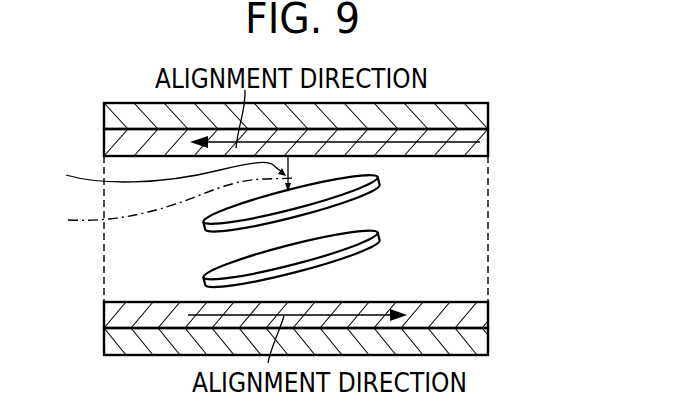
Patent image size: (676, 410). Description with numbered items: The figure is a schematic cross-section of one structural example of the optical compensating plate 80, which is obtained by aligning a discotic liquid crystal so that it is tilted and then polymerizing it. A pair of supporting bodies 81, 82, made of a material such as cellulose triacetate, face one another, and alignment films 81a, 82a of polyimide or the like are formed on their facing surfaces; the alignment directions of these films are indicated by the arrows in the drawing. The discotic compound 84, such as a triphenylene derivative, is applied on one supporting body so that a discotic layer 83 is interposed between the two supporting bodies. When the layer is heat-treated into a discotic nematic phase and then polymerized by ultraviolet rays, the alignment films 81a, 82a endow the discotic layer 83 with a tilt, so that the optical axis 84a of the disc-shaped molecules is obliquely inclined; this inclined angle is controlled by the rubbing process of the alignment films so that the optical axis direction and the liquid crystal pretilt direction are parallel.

The optical compensating plate 80 is at (478, 84).
The supporting body 81 is at (482, 340).
The alignment film 81a is at (482, 310).
The supporting body 82 is at (490, 112).
The alignment film 82a is at (490, 142).
The discotic layer 83 is at (482, 217).
The discotic compound 84 is at (207, 217).
The optical axis 84a is at (161, 205).